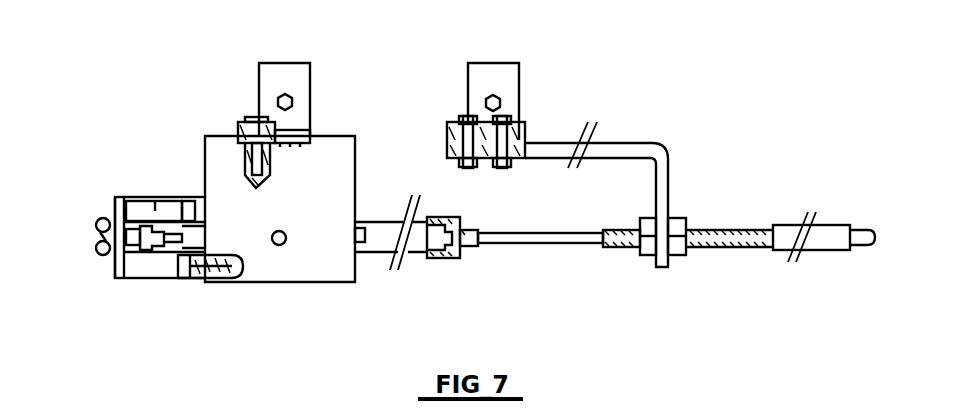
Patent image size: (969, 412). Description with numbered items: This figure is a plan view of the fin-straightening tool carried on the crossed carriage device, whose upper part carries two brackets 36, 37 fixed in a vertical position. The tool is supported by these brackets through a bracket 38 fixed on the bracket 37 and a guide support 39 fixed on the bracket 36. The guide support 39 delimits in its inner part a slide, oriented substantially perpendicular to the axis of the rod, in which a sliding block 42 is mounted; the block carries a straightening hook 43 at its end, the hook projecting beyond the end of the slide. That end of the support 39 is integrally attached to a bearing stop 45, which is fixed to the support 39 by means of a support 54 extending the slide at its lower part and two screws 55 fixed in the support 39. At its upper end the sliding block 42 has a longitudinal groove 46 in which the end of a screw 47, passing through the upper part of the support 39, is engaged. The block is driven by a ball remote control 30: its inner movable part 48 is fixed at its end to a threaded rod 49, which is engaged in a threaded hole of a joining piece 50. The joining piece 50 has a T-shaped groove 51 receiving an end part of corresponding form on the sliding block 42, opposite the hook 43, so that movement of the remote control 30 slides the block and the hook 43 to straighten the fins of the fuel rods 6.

The fuel rod 6 is at (97, 236).
The ball remote control 30 is at (793, 225).
The bracket 36 is at (286, 75).
The bracket 37 is at (512, 80).
The bracket 38 is at (634, 150).
The guide support 39 is at (337, 266).
The sliding block 42 is at (378, 232).
The straightening hook 43 is at (125, 201).
The bearing stop 45 is at (116, 277).
The longitudinal groove 46 is at (181, 271).
The screw 47 is at (278, 246).
The inner movable part 48 is at (590, 249).
The threaded rod 49 is at (490, 245).
The joining piece 50 is at (462, 261).
The T-shaped groove 51 is at (419, 256).
The support 54 is at (156, 208).
The screws 55 is at (189, 204).